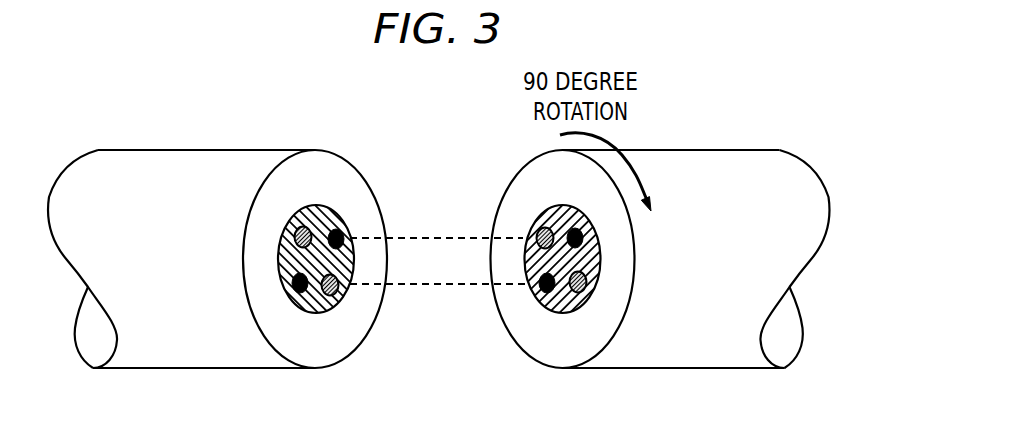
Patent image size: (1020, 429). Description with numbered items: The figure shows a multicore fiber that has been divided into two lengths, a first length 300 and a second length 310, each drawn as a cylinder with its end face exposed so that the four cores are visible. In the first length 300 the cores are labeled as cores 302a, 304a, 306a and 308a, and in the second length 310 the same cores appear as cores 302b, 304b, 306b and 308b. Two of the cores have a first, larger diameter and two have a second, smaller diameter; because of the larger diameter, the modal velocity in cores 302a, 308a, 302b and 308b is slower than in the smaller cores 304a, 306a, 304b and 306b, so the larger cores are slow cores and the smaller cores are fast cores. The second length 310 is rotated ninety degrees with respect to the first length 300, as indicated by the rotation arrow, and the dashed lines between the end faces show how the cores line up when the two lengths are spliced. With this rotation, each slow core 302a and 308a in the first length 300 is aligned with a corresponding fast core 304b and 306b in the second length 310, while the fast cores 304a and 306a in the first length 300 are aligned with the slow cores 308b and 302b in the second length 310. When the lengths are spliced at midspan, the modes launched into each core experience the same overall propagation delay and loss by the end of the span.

The first length 300 is at (181, 128).
The second length 310 is at (753, 128).
The slow core 302a is at (301, 233).
The fast core 304a is at (339, 238).
The fast core 306a is at (299, 283).
The slow core 308a is at (330, 292).
The slow core 302b is at (586, 287).
The fast core 304b is at (582, 237).
The fast core 306b is at (545, 285).
The slow core 308b is at (544, 232).